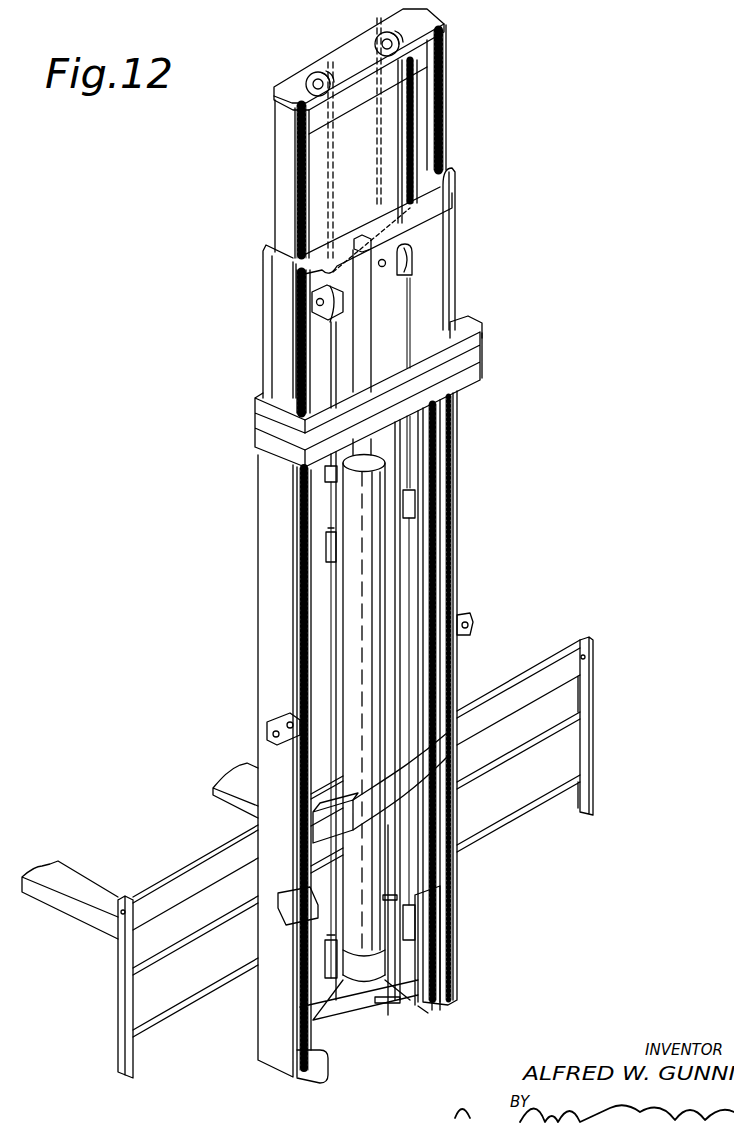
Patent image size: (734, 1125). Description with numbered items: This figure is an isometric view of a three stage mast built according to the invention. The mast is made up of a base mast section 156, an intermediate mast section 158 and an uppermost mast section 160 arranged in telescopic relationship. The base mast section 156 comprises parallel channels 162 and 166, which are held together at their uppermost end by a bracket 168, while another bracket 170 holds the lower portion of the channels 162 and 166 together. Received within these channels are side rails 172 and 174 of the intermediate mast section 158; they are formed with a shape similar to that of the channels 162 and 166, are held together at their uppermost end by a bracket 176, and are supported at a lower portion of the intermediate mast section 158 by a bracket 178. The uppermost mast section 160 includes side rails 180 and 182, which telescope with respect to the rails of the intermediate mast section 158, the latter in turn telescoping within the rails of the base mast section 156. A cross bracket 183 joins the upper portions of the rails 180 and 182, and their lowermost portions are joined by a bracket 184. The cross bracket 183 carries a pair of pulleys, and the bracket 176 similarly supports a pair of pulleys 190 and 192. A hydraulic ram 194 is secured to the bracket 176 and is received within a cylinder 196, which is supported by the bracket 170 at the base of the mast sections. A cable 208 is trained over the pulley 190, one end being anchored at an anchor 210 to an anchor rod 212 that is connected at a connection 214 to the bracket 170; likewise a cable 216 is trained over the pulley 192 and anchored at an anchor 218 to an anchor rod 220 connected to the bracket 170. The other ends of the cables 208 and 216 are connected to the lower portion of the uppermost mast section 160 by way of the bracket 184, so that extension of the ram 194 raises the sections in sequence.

The base mast section 156 is at (356, 751).
The intermediate mast section 158 is at (353, 293).
The uppermost mast section 160 is at (356, 208).
The channel 162 is at (270, 588).
The channel 166 is at (457, 528).
The bracket 168 is at (476, 334).
The bracket 170 is at (437, 920).
The side rail 172 is at (270, 258).
The side rail 174 is at (451, 208).
The bracket 176 is at (433, 202).
The bracket 178 is at (420, 790).
The side rail 180 is at (282, 118).
The side rail 182 is at (446, 110).
The cross bracket 183 is at (352, 48).
The bracket 184 is at (323, 1062).
The pulley 190 is at (326, 323).
The pulley 192 is at (414, 256).
The hydraulic ram 194 is at (356, 382).
The cylinder 196 is at (362, 617).
The cable 208 is at (330, 478).
The anchor 210 is at (323, 536).
The anchor rod 212 is at (261, 718).
The connection 214 is at (323, 953).
The cable 216 is at (469, 609).
The anchor 218 is at (418, 497).
The anchor rod 220 is at (412, 582).